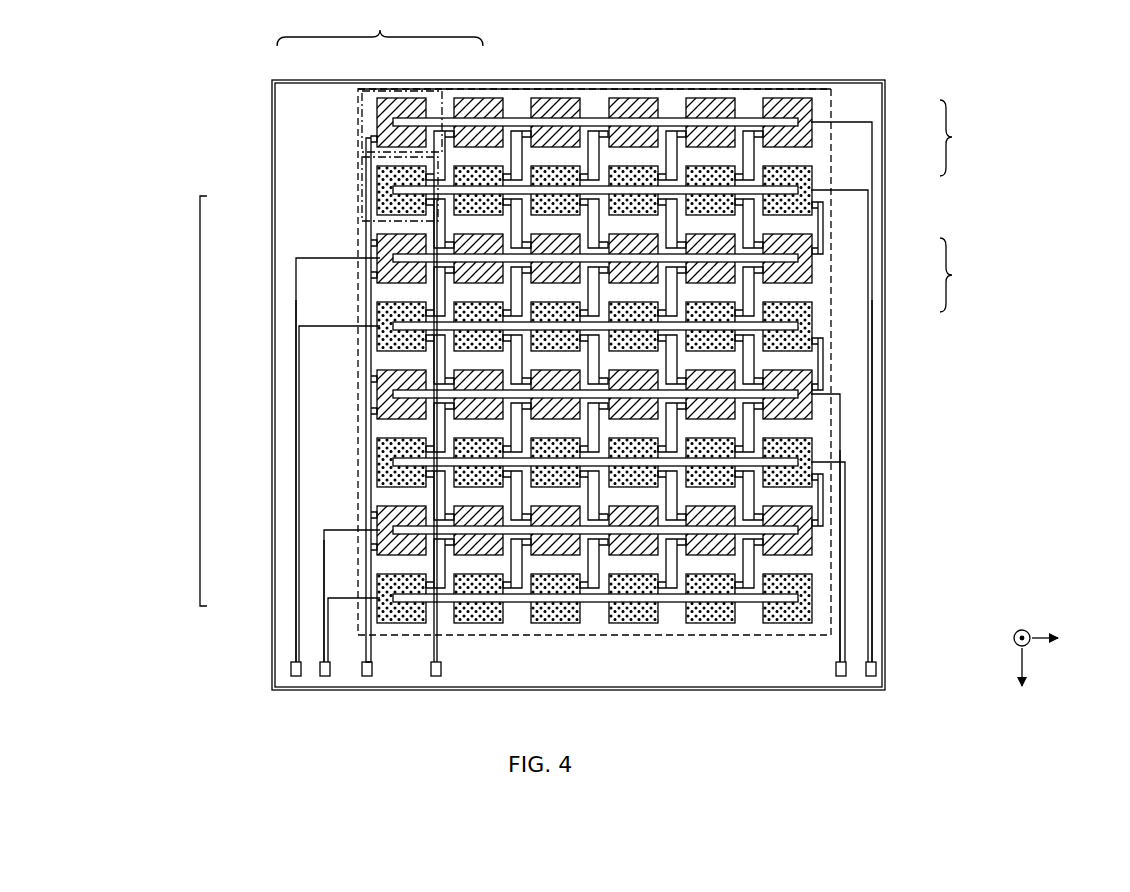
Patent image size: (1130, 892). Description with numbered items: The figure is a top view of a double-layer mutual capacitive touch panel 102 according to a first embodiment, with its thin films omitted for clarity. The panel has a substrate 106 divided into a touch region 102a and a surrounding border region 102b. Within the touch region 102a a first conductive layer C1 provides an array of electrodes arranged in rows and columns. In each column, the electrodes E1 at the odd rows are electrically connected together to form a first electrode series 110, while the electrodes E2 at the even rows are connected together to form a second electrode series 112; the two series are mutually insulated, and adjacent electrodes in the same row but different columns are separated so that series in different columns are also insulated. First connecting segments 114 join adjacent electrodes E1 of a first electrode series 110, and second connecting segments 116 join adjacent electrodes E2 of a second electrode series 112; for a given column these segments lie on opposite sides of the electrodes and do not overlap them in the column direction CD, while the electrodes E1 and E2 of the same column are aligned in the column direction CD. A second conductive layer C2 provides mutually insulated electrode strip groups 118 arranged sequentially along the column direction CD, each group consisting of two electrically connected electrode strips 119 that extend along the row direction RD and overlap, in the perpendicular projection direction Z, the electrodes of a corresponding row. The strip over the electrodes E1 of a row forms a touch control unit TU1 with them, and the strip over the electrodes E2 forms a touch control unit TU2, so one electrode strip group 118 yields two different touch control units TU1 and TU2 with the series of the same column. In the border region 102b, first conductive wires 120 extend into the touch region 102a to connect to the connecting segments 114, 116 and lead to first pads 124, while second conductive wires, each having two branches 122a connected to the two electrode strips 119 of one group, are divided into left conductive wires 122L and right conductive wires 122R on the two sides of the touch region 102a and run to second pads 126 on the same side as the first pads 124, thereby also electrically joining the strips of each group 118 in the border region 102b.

The double-layer mutual capacitive touch panel 102 is at (1026, 82).
The touch region 102a is at (672, 105).
The border region 102b is at (660, 78).
The substrate 106 is at (887, 590).
The first electrode series 110 is at (380, 26).
The second electrode series 112 is at (200, 400).
The first connecting segment 114 is at (366, 378).
The second connecting segment 116 is at (430, 426).
The electrode strip group 118 is at (966, 206).
The electrode strip 119 is at (800, 121).
The first conductive wire 120 is at (371, 652).
The branch 122a is at (330, 263).
The left conductive wire 122L is at (291, 665).
The right conductive wire 122R is at (887, 518).
The first pad 124 is at (368, 678).
The second pad 126 is at (296, 678).
The electrode E1 is at (410, 370).
The electrode E2 is at (385, 203).
The touch control unit TU1 is at (490, 97).
The touch control unit TU2 is at (505, 180).
The first conductive layer C1 is at (800, 108).
The second conductive layer C2 is at (773, 105).
The perpendicular projection direction Z is at (1022, 620).
The row direction RD is at (1067, 638).
The column direction CD is at (1023, 683).